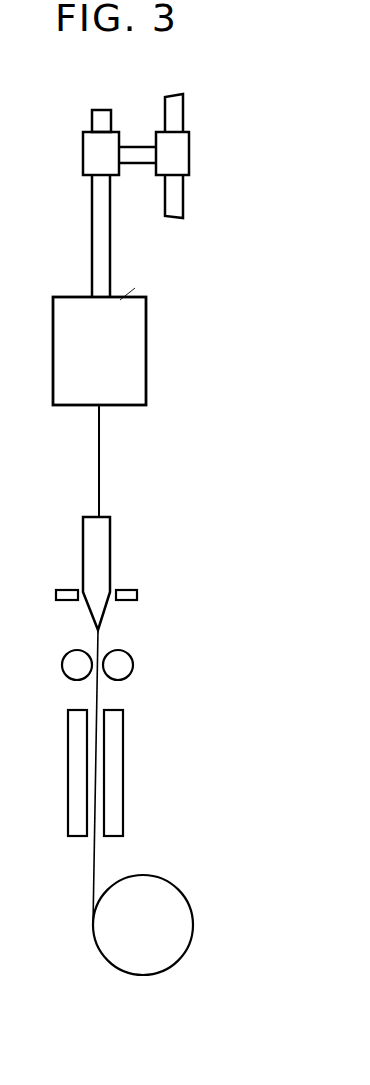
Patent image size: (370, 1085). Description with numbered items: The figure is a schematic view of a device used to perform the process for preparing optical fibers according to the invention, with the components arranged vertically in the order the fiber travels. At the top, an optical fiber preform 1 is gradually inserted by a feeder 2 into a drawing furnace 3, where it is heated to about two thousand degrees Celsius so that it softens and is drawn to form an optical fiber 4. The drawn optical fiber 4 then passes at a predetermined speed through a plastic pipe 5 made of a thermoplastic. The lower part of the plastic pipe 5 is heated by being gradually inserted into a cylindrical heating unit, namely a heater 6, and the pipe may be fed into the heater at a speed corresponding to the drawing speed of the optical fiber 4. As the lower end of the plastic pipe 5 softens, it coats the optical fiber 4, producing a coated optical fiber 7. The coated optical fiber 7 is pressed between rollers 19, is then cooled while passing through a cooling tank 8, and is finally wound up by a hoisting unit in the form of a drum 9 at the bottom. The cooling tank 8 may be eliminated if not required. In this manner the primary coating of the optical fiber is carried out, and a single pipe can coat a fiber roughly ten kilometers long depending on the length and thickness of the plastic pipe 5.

The optical fiber preform 1 is at (110, 270).
The feeder 2 is at (190, 157).
The drawing furnace 3 is at (146, 350).
The optical fiber 4 is at (99, 480).
The plastic pipe 5 is at (110, 555).
The heater 6 is at (137, 595).
The coated optical fiber 7 is at (93, 688).
The cooling tank 8 is at (115, 740).
The drum 9 is at (155, 882).
The rollers 19 is at (133, 668).